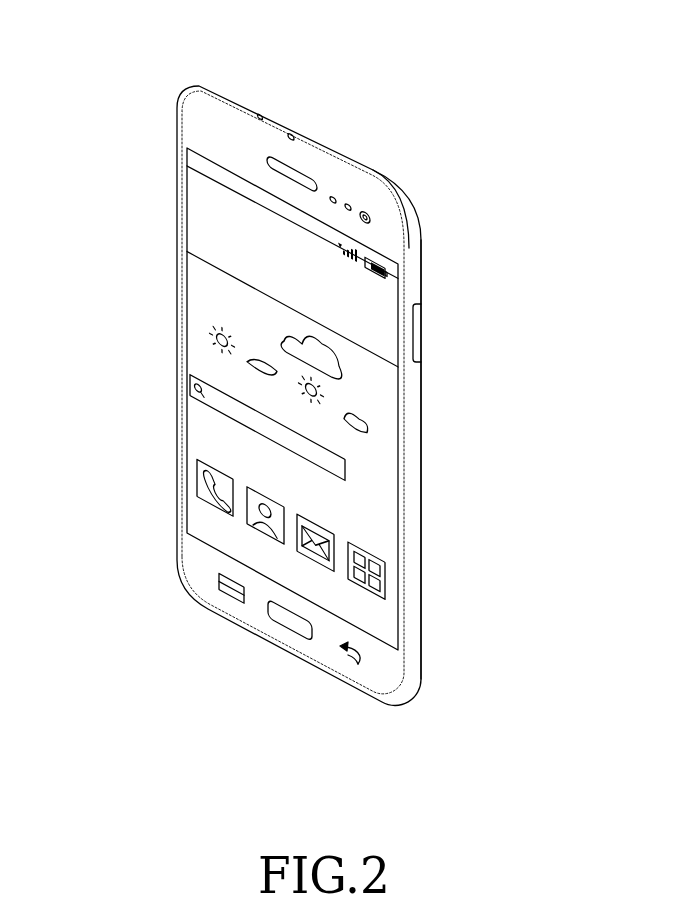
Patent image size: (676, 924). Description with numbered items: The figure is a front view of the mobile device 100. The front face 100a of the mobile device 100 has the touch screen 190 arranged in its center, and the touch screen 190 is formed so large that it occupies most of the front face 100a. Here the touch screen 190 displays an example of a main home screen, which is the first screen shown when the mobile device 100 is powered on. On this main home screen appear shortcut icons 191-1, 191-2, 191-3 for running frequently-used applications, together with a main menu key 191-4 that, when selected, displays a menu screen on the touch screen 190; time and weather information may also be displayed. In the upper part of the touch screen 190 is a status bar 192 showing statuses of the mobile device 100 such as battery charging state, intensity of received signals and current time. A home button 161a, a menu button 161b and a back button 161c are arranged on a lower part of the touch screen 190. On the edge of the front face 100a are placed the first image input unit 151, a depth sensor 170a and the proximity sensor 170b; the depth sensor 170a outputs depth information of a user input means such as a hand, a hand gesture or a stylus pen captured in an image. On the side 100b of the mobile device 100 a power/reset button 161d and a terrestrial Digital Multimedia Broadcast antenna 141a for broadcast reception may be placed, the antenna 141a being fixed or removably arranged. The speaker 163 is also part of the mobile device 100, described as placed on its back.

The mobile device 100 is at (153, 63).
The front face 100a is at (192, 130).
The side 100b is at (416, 439).
The terrestrial Digital Multimedia Broadcast (DMB) antenna 141a is at (404, 209).
The first image input unit 151 is at (367, 210).
The home button 161a is at (293, 622).
The menu button 161b is at (218, 580).
The back button 161c is at (350, 666).
The power/reset button 161d is at (423, 335).
The speaker 163 is at (264, 158).
The depth sensor 170a is at (332, 197).
The proximity sensor 170b is at (349, 203).
The touch screen 190 is at (198, 353).
The shortcut icon 191-1 is at (213, 463).
The shortcut icon 191-2 is at (262, 486).
The shortcut icon 191-3 is at (327, 527).
The main menu key 191-4 is at (367, 555).
The status bar 192 is at (196, 167).